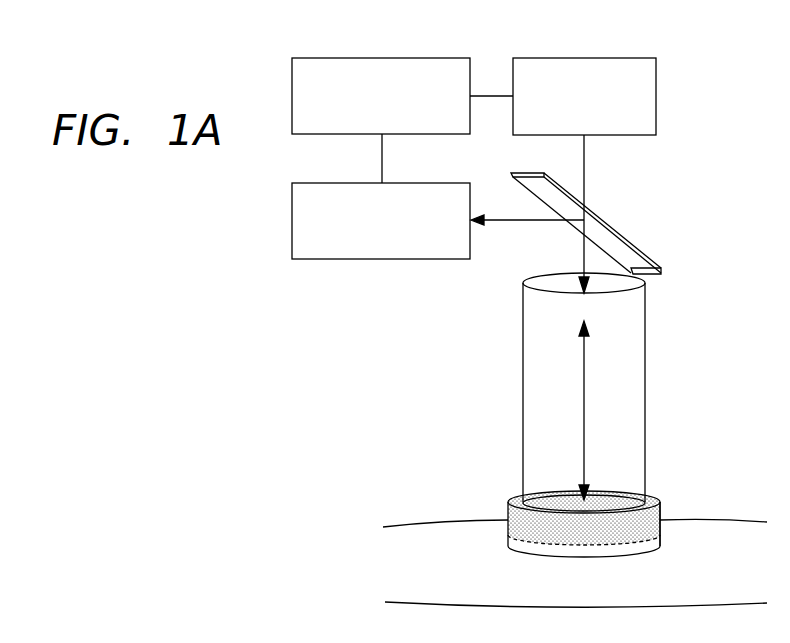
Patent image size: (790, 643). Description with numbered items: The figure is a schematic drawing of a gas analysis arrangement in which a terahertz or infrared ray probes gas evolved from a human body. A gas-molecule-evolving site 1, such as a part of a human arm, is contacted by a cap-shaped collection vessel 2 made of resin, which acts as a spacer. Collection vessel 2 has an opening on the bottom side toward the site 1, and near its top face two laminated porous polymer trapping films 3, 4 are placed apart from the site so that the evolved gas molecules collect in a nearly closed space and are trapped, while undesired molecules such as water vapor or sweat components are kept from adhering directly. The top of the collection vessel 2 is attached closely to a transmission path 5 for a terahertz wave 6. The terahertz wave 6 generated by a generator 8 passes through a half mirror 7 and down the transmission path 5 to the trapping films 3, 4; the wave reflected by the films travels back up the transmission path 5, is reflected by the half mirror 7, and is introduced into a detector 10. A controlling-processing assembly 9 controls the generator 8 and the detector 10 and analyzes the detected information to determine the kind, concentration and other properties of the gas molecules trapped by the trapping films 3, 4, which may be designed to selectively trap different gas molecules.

The gas-molecule-evolving site 1 is at (730, 533).
The collection vessel 2 is at (660, 537).
The trapping film 3 is at (508, 537).
The trapping film 4 is at (508, 512).
The transmission path 5 is at (646, 350).
The terahertz wave 6 is at (584, 378).
The half mirror 7 is at (618, 247).
The generator 8 is at (656, 79).
The controlling-processing assembly 9 is at (292, 85).
The detector 10 is at (292, 208).